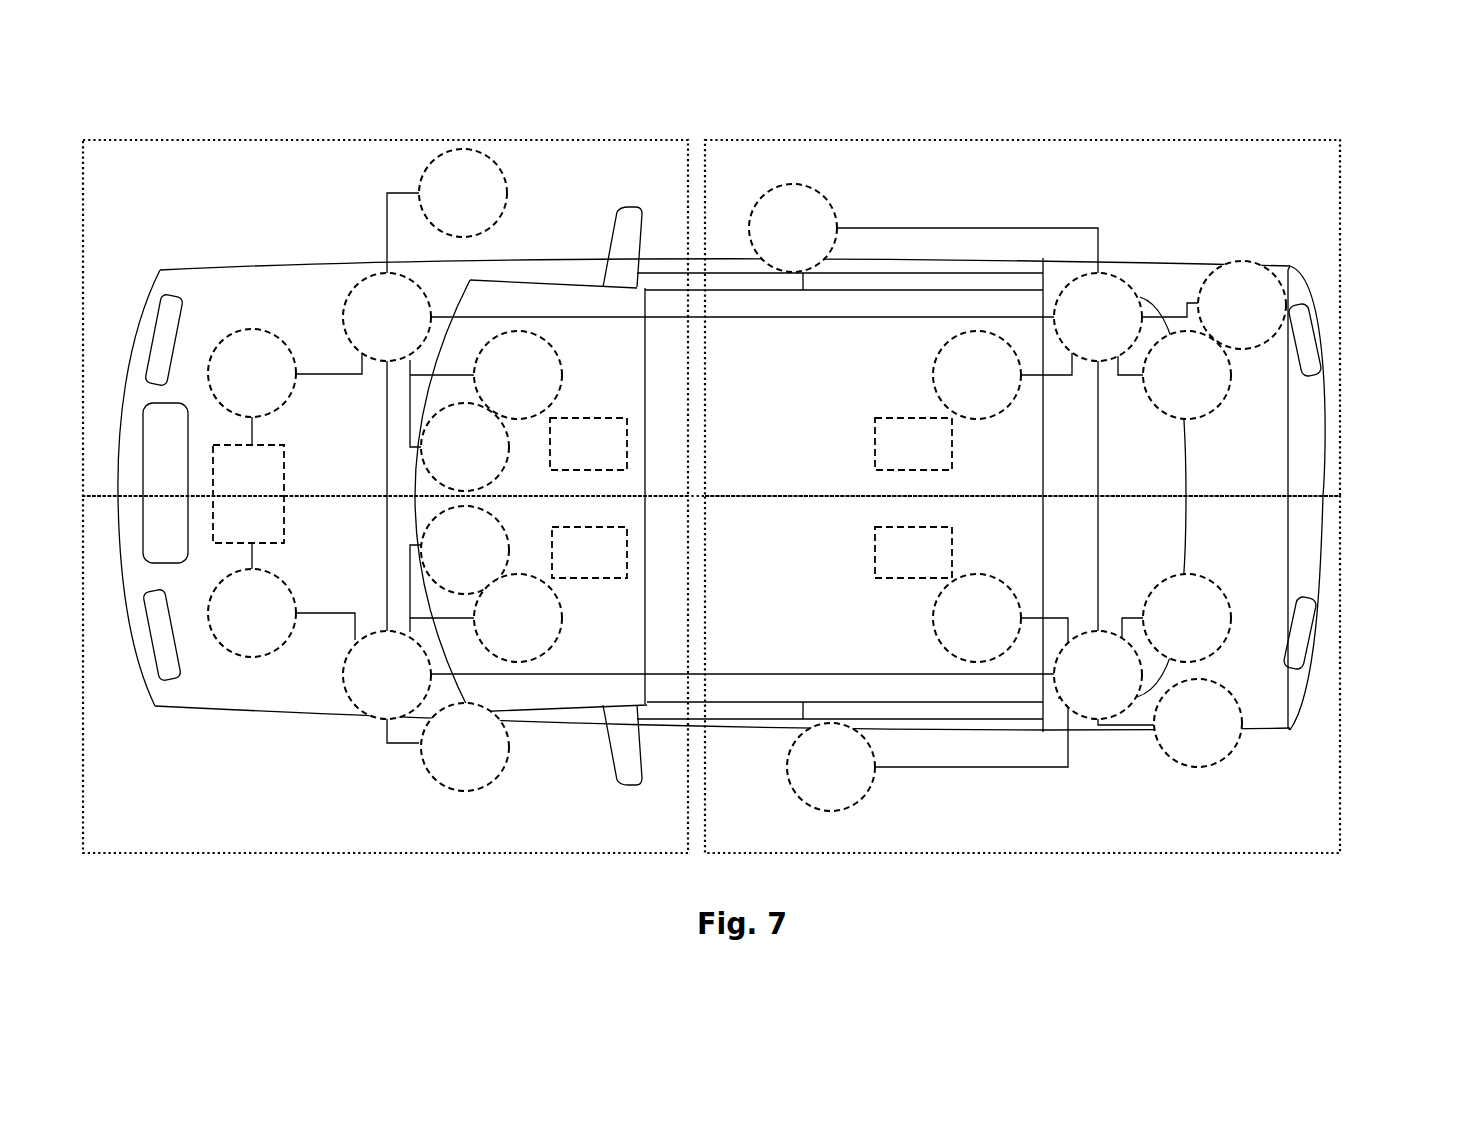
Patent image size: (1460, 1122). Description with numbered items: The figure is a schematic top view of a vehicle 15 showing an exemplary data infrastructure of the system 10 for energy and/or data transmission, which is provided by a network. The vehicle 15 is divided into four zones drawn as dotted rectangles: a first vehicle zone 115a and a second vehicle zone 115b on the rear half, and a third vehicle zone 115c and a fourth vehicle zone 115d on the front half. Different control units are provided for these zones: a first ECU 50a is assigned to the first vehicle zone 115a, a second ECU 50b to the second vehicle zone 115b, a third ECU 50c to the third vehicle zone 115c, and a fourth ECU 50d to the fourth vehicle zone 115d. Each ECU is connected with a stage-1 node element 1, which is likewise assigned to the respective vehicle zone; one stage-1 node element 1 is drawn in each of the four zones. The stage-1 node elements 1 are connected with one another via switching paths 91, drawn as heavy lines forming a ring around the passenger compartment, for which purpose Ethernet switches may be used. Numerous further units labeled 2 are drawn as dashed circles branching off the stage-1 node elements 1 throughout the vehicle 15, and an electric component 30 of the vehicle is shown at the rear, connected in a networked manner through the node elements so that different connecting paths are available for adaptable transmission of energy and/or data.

The system 10 is at (196, 120).
The vehicle 15 is at (1257, 710).
The stage-1 node element 1 is at (378, 334).
The sensor 2 is at (454, 210).
The electric component 30 is at (232, 491).
The first ECU 50a is at (564, 459).
The second ECU 50b is at (564, 568).
The third ECU 50c is at (938, 459).
The fourth ECU 50d is at (938, 568).
The switching path 91 is at (386, 445).
The first vehicle zone 115a is at (402, 140).
The second vehicle zone 115b is at (400, 853).
The third vehicle zone 115c is at (1340, 183).
The fourth vehicle zone 115d is at (1334, 788).